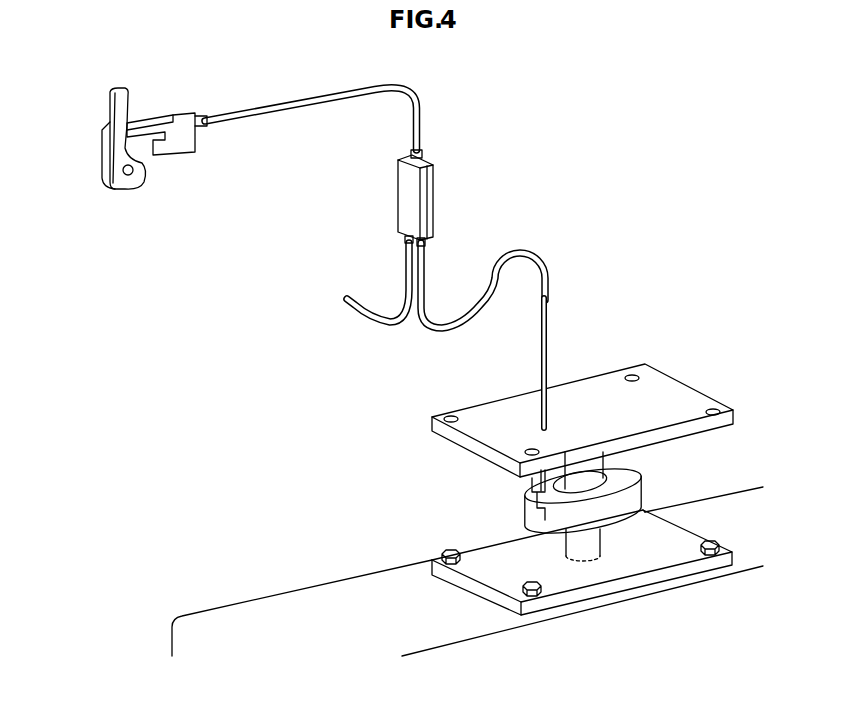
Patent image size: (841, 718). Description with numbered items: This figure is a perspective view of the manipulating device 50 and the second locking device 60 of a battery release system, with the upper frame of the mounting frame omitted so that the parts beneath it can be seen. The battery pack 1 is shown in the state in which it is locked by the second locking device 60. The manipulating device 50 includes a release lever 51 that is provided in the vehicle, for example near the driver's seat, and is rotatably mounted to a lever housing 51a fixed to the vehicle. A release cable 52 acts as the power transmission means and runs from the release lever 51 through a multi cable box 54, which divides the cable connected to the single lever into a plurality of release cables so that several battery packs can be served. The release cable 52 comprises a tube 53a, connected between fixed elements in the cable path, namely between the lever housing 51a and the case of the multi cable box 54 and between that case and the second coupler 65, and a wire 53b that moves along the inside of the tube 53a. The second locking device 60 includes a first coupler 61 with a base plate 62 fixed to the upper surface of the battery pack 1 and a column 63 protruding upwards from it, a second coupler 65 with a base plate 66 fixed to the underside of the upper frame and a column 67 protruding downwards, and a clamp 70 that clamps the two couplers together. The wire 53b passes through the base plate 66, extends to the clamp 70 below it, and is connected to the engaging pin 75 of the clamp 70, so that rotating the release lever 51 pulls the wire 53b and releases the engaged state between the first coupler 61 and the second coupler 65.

The battery pack 1 is at (343, 620).
The manipulating device 50 is at (462, 256).
The release lever 51 is at (113, 112).
The lever housing 51a is at (190, 140).
The release cable 52 is at (553, 288).
The tube 53a is at (543, 352).
The wire 53b is at (532, 480).
The multi cable box 54 is at (434, 182).
The second locking device 60 is at (678, 487).
The first coupler 61 is at (690, 548).
The base plate 62 is at (637, 567).
The column 63 is at (583, 542).
The second coupler 65 is at (678, 370).
The base plate 66 is at (610, 396).
The column 67 is at (582, 470).
The clamp 70 is at (660, 462).
The engaging pin 75 is at (528, 490).